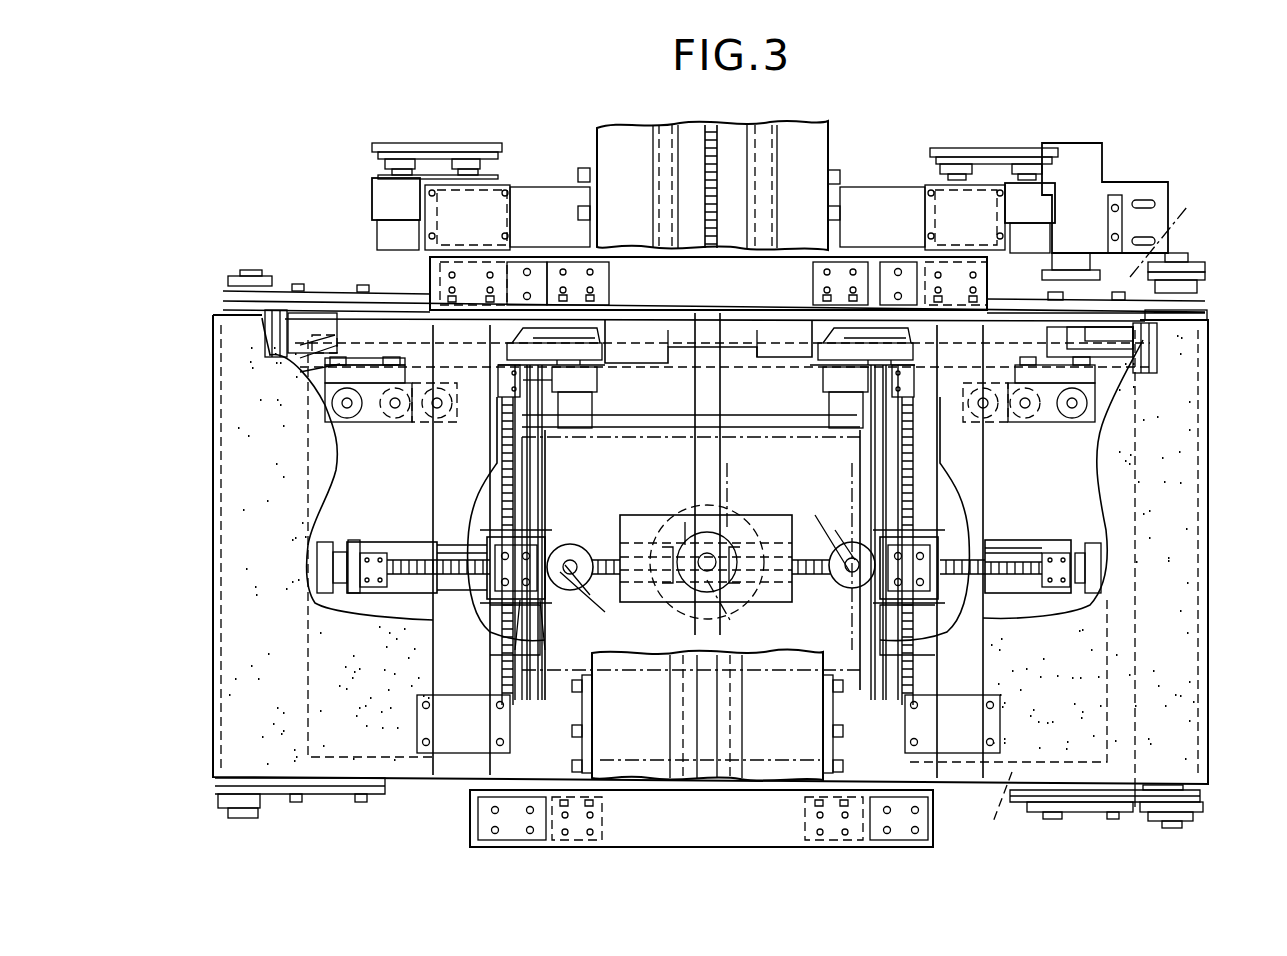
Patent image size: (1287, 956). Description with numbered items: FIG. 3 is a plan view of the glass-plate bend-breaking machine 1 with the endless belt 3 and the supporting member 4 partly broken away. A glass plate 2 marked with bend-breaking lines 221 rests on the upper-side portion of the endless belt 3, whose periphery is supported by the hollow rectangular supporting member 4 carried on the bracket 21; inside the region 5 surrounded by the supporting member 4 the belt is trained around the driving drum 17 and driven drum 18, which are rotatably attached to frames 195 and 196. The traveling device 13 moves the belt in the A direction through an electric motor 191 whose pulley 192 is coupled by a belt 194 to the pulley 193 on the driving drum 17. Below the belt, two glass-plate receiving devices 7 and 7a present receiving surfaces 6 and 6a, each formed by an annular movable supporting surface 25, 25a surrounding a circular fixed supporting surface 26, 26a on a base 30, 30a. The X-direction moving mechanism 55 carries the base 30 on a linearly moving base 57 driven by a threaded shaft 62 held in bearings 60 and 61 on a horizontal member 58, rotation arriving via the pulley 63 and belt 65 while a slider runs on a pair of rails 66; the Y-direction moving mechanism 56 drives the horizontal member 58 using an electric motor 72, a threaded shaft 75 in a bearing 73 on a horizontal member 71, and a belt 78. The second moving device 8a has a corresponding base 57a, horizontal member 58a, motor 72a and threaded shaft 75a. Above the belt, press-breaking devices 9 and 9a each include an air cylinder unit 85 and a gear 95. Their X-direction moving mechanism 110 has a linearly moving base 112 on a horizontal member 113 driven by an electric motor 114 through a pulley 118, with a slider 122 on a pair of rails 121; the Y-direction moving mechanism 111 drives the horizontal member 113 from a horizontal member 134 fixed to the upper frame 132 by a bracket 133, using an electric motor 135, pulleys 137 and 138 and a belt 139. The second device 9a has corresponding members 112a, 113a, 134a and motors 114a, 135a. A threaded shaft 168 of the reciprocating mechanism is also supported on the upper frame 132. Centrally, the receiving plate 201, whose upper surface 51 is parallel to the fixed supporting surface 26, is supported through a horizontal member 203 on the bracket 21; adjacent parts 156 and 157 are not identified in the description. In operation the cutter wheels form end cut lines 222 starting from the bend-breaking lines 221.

The glass-plate bend-breaking machine 1 is at (1220, 220).
The glass plate 2 is at (740, 430).
The endless belt 3 is at (1185, 565).
The supporting member 4 is at (997, 808).
The region 5 is at (1065, 483).
The glass-plate receiving surface 6 is at (567, 560).
The glass-plate receiving surface 6a is at (852, 588).
The glass-plate receiving device 7 is at (548, 600).
The glass-plate receiving device 7a is at (840, 598).
The moving device 8a is at (995, 535).
The press-breaking device 9 is at (407, 413).
The press-breaking device 9a is at (1117, 416).
The traveling device 13 is at (1050, 187).
The driving drum 17 is at (1170, 330).
The driven drum 18 is at (232, 783).
The bracket 21 is at (600, 826).
The movable supporting surface 25 is at (563, 542).
The ball screw 25a is at (852, 545).
The fixed supporting surface 26 is at (615, 600).
The nut 26a is at (825, 530).
The base 30 is at (512, 612).
The bracket 30a is at (940, 590).
The upper surface 51 is at (768, 520).
The X-direction moving mechanism 55 is at (383, 538).
The Y-direction moving mechanism 56 is at (602, 378).
The X-direction linearly moving base 57 is at (497, 545).
The slide block 57a is at (909, 566).
The horizontal member 58 is at (610, 550).
The guide rail 58a is at (1012, 558).
The bearing 60 is at (372, 580).
The bearing 61 is at (676, 525).
The threaded shaft 62 is at (418, 548).
The pulley 63 is at (317, 565).
The belt 65 is at (345, 547).
The pair of rails 66 is at (388, 553).
The horizontal member 71 is at (543, 410).
The electric motor 72 is at (590, 387).
The electric motor 72a is at (829, 412).
The bearing 73 is at (500, 380).
The threaded shaft 75 is at (505, 447).
The vertical rack 75a is at (915, 470).
The belt 78 is at (606, 350).
The air cylinder unit 85 is at (454, 404).
The pulley or gear 95 is at (352, 395).
The X-direction moving mechanism 110 is at (292, 360).
The Y-direction moving mechanism 111 is at (397, 220).
The X-direction linearly moving base 112 is at (325, 378).
The guide plate 112a is at (1090, 378).
The horizontal member 113 is at (655, 345).
The plate 113a is at (760, 345).
The electric motor 114 is at (306, 335).
The electric motor 114a is at (1105, 344).
The pulley 118 is at (262, 330).
The pair of rails 121 is at (322, 375).
The slider 122 is at (392, 358).
The upper frame 132 is at (645, 155).
The bracket 133 is at (551, 196).
The horizontal member 134 is at (445, 660).
The column 134a is at (965, 668).
The electric motor 135 is at (385, 188).
The electric motor 135a is at (1027, 195).
The pulley 137 is at (396, 150).
The pulley 138 is at (480, 152).
The belt 139 is at (438, 152).
The rotary table 156 is at (717, 545).
The shaft 157 is at (738, 609).
The threaded shaft 168 is at (717, 170).
The electric motor 191 is at (1095, 168).
The pulley 192 is at (1050, 275).
The pulley 193 is at (1200, 275).
The belt 194 is at (1142, 265).
The frame 195 is at (1135, 805).
The frame 196 is at (312, 798).
The receiving plate 201 is at (648, 515).
The horizontal member 203 is at (708, 384).
The bend-breaking lines 221 is at (800, 680).
The end cut lines 222 is at (860, 430).